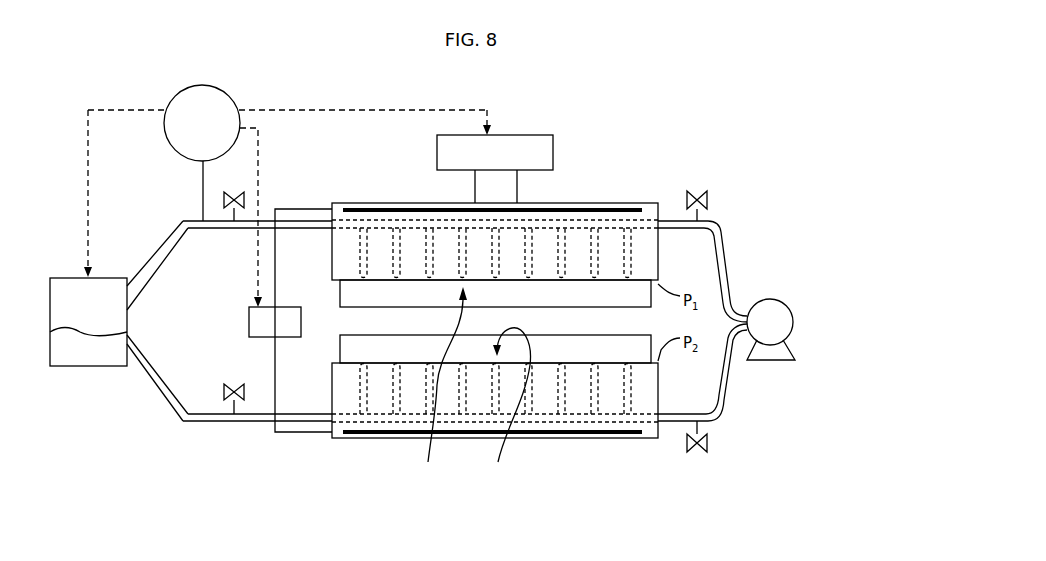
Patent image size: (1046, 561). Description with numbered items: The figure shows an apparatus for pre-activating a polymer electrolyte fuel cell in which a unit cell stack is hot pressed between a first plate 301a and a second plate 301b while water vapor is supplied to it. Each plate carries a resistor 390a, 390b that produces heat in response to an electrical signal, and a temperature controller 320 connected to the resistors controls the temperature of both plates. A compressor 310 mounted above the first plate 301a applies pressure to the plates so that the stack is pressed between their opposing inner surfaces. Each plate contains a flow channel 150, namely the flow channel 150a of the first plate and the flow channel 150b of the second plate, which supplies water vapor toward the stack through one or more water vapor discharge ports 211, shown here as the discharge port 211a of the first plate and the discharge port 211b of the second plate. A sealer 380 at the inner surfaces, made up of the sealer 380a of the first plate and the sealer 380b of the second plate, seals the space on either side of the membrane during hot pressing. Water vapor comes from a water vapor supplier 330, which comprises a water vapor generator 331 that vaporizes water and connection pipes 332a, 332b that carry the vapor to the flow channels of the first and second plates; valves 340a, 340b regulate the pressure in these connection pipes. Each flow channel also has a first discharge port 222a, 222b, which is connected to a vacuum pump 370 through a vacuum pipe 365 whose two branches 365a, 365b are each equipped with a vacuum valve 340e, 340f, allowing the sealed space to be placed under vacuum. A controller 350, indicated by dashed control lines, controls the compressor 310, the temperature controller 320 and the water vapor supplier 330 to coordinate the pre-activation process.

The compressor 310 is at (497, 133).
The controller 350 is at (287, 196).
The first plate 301a is at (545, 203).
The second plate 301b is at (523, 438).
The resistor 390a is at (612, 209).
The resistor 390b is at (367, 434).
The first discharge port 222a is at (663, 218).
The first discharge port 222b is at (658, 417).
The valve 340a is at (224, 200).
The valve 340b is at (243, 406).
The vacuum valve 340e is at (707, 199).
The vacuum valve 340f is at (707, 445).
The vacuum pump 370 is at (793, 322).
The temperature controller 320 is at (249, 318).
The water vapor generator 331 is at (72, 367).
The connection pipe 332a is at (147, 280).
The connection pipe 332b is at (212, 418).
The water vapor supplier 330 is at (142, 440).
The sealer 380a is at (342, 295).
The sealer 380b is at (347, 347).
The sealer 380 is at (345, 498).
The water vapor discharge port 211a is at (440, 385).
The water vapor discharge port 211b is at (504, 405).
The water vapor discharge port 211 is at (432, 488).
The flow channel 150a is at (570, 223).
The flow channel 150b is at (612, 417).
The flow channel 150 is at (610, 510).
The vacuum pipe 365a is at (730, 366).
The vacuum pipe 365b is at (726, 398).
The vacuum pipe 365 is at (836, 386).